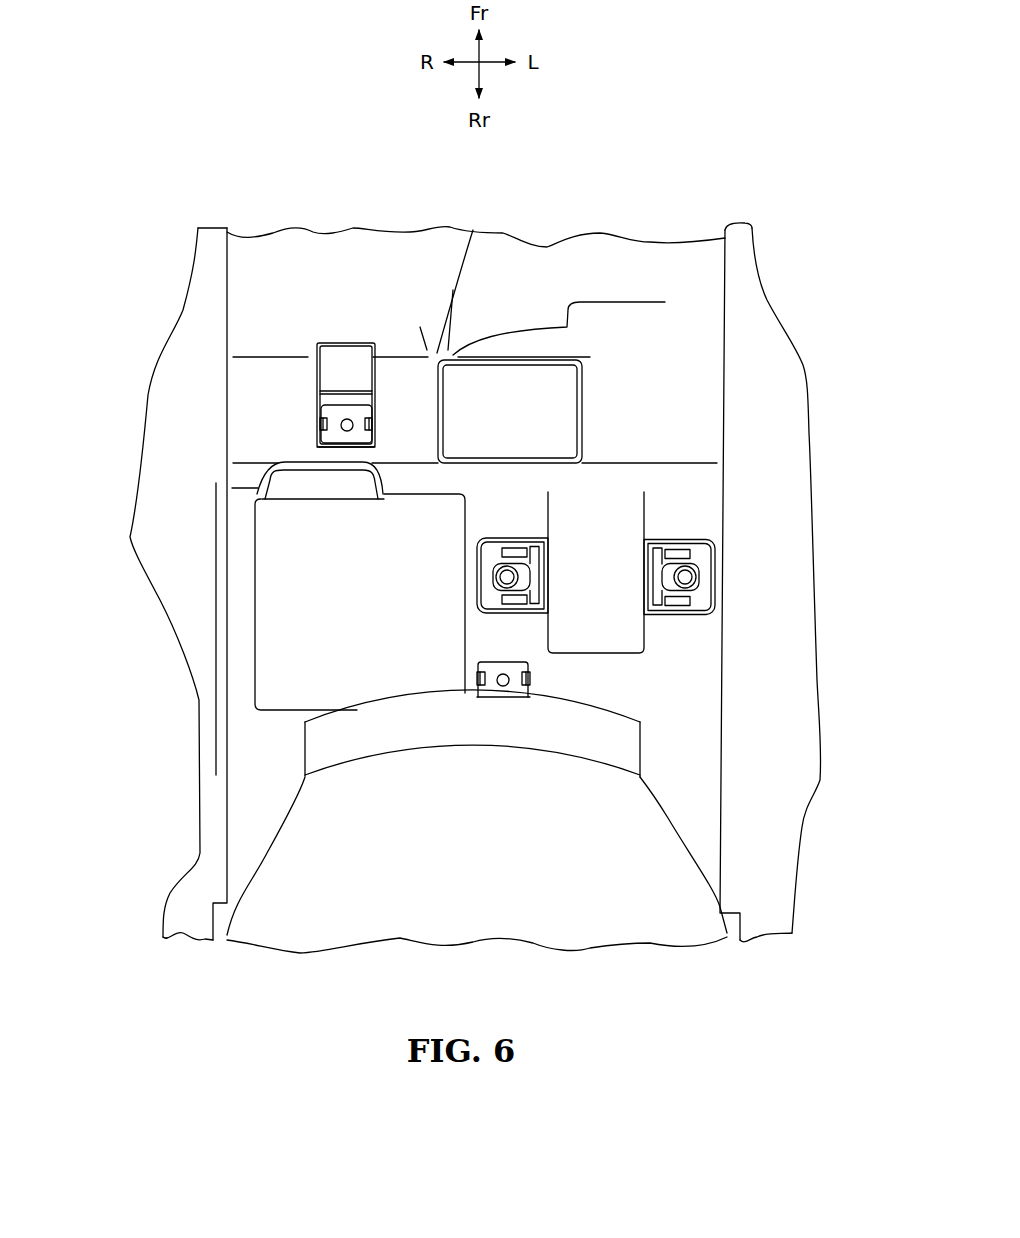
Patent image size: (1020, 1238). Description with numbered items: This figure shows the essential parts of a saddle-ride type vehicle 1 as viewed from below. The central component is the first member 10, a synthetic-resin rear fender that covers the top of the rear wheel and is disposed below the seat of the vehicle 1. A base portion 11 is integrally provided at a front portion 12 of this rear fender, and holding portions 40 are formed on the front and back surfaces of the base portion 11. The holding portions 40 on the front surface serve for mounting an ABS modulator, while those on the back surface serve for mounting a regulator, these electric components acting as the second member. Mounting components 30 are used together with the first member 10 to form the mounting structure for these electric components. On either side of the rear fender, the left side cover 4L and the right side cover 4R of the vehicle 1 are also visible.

The saddle-ride type vehicle 1 is at (695, 167).
The right side cover 4R is at (173, 610).
The left side cover 4L is at (798, 805).
The first member 10 is at (610, 928).
The base portion 11 is at (693, 493).
The front portion 12 is at (270, 385).
The mounting component 30 is at (340, 408).
The holding portion 40 is at (523, 525).